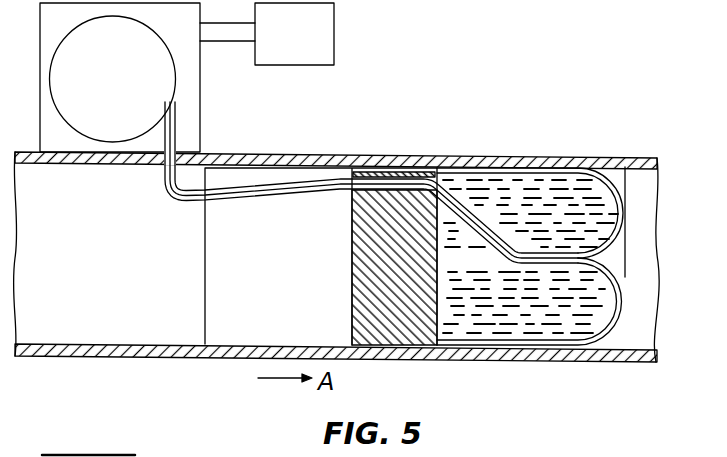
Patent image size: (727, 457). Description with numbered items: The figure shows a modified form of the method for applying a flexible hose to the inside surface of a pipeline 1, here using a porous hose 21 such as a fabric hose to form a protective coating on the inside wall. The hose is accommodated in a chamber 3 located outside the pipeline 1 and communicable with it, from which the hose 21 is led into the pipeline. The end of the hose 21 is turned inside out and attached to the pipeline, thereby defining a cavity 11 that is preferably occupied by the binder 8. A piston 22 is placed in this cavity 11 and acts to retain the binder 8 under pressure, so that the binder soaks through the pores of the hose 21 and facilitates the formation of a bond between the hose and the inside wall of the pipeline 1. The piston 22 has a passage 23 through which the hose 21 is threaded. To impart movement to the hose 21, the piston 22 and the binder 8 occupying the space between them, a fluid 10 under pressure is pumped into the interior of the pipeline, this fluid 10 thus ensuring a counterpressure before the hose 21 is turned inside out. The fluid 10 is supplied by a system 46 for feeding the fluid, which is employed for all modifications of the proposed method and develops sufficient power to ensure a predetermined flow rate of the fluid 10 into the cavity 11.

The pipeline 1 is at (330, 156).
The chamber 3 is at (190, 124).
The binder 8 is at (500, 330).
The fluid 10 is at (621, 177).
The cavity 11 is at (541, 196).
The porous hose 21 is at (178, 146).
The piston 22 is at (424, 240).
The passage 23 is at (403, 172).
The system for feeding the fluid 46 is at (323, 38).